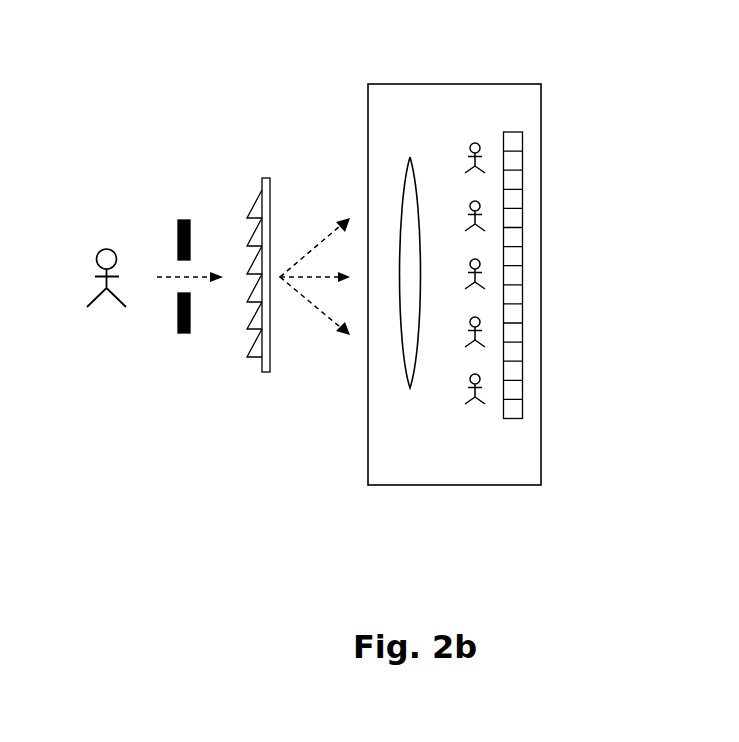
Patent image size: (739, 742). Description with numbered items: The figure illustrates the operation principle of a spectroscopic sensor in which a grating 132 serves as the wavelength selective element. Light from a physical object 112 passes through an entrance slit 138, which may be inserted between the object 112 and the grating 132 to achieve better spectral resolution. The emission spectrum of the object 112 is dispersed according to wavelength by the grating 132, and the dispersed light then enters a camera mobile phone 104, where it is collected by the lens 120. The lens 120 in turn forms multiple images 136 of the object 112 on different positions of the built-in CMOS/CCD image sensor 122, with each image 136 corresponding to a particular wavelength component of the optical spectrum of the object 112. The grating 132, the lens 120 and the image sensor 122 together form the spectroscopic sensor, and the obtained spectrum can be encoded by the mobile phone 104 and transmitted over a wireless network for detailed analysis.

The physical object 112 is at (101, 248).
The entrance slit 138 is at (182, 334).
The grating 132 is at (270, 190).
The camera mobile phone 104 is at (462, 486).
The lens 120 is at (415, 372).
The multiple images 136 is at (474, 120).
The CMOS/CCD image sensor 122 is at (523, 383).